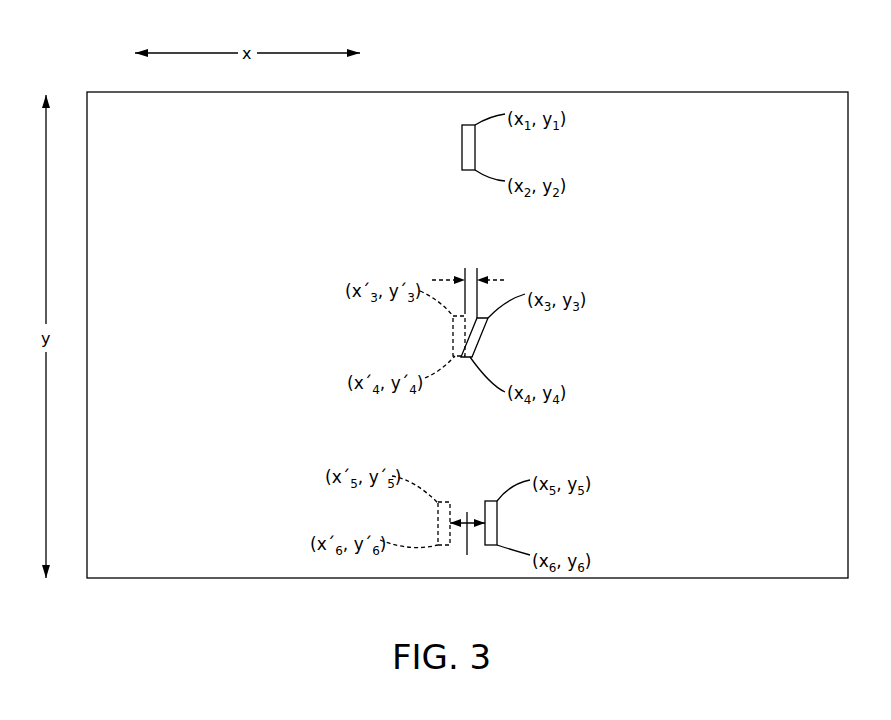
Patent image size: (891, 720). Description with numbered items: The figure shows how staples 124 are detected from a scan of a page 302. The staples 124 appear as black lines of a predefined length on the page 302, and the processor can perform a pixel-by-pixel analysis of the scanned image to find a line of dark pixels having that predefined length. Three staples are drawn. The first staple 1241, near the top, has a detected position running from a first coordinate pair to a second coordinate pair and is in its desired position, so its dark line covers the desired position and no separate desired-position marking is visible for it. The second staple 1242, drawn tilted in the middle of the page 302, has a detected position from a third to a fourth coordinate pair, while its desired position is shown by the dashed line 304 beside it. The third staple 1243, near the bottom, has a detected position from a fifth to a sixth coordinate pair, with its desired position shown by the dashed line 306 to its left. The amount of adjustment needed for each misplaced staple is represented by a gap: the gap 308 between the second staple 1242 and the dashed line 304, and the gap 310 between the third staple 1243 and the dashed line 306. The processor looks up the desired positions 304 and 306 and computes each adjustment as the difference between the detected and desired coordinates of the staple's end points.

The page 302 is at (757, 92).
The staples 124 is at (481, 335).
The first staple 1241 is at (462, 148).
The second staple 1242 is at (481, 337).
The third staple 1243 is at (497, 523).
The dashed line 304 is at (453, 343).
The dashed line 306 is at (438, 520).
The gap 308 is at (496, 280).
The gap 310 is at (467, 512).